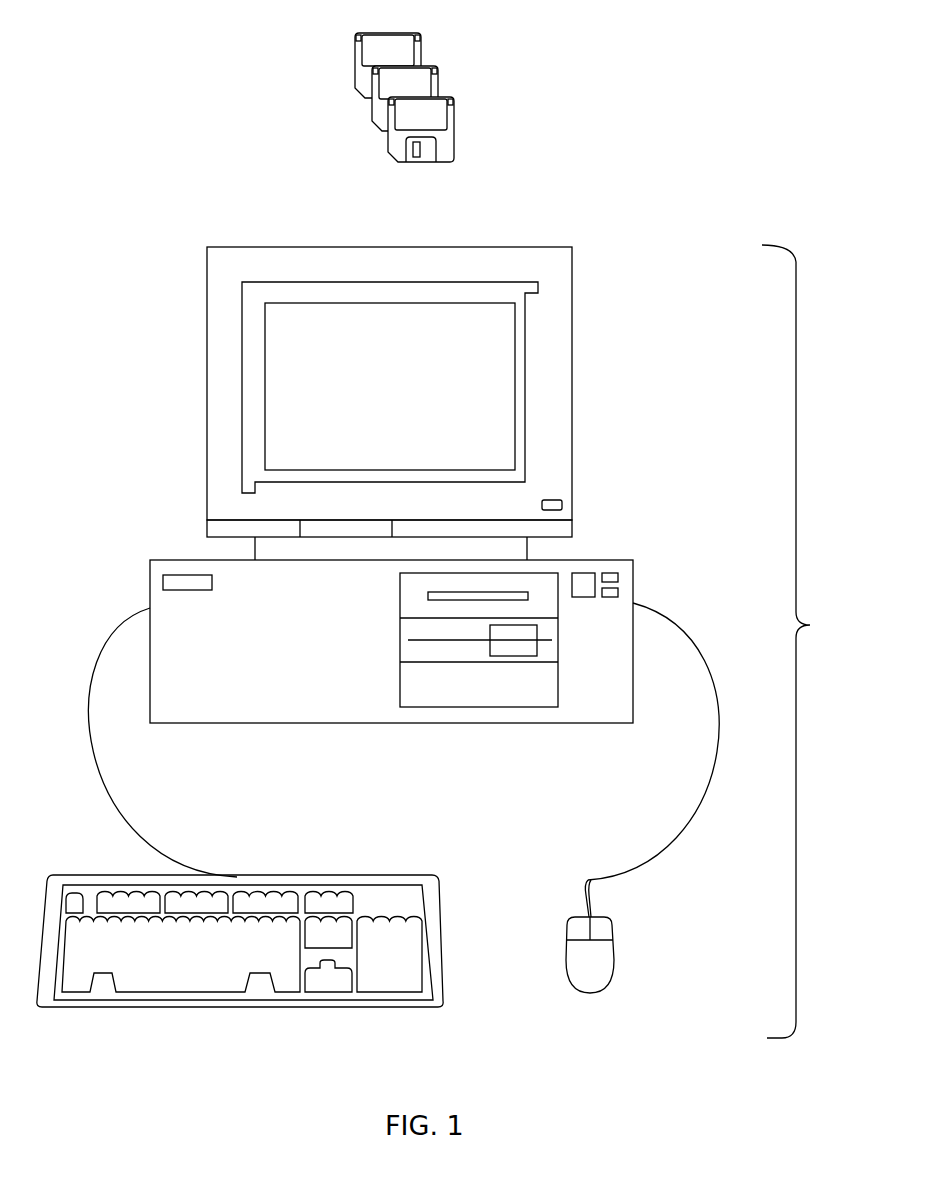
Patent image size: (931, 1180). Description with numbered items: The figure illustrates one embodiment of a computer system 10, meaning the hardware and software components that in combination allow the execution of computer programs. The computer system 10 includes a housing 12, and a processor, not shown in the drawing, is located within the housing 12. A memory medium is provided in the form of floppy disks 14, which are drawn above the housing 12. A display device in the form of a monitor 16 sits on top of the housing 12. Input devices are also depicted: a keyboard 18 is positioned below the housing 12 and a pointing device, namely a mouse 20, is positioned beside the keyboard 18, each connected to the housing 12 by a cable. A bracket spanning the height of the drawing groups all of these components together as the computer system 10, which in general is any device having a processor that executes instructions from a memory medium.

The computer system 10 is at (804, 641).
The housing 12 is at (291, 656).
The floppy disks 14 is at (404, 114).
The monitor 16 is at (398, 397).
The keyboard 18 is at (240, 827).
The pointing device (mouse) 20 is at (642, 817).